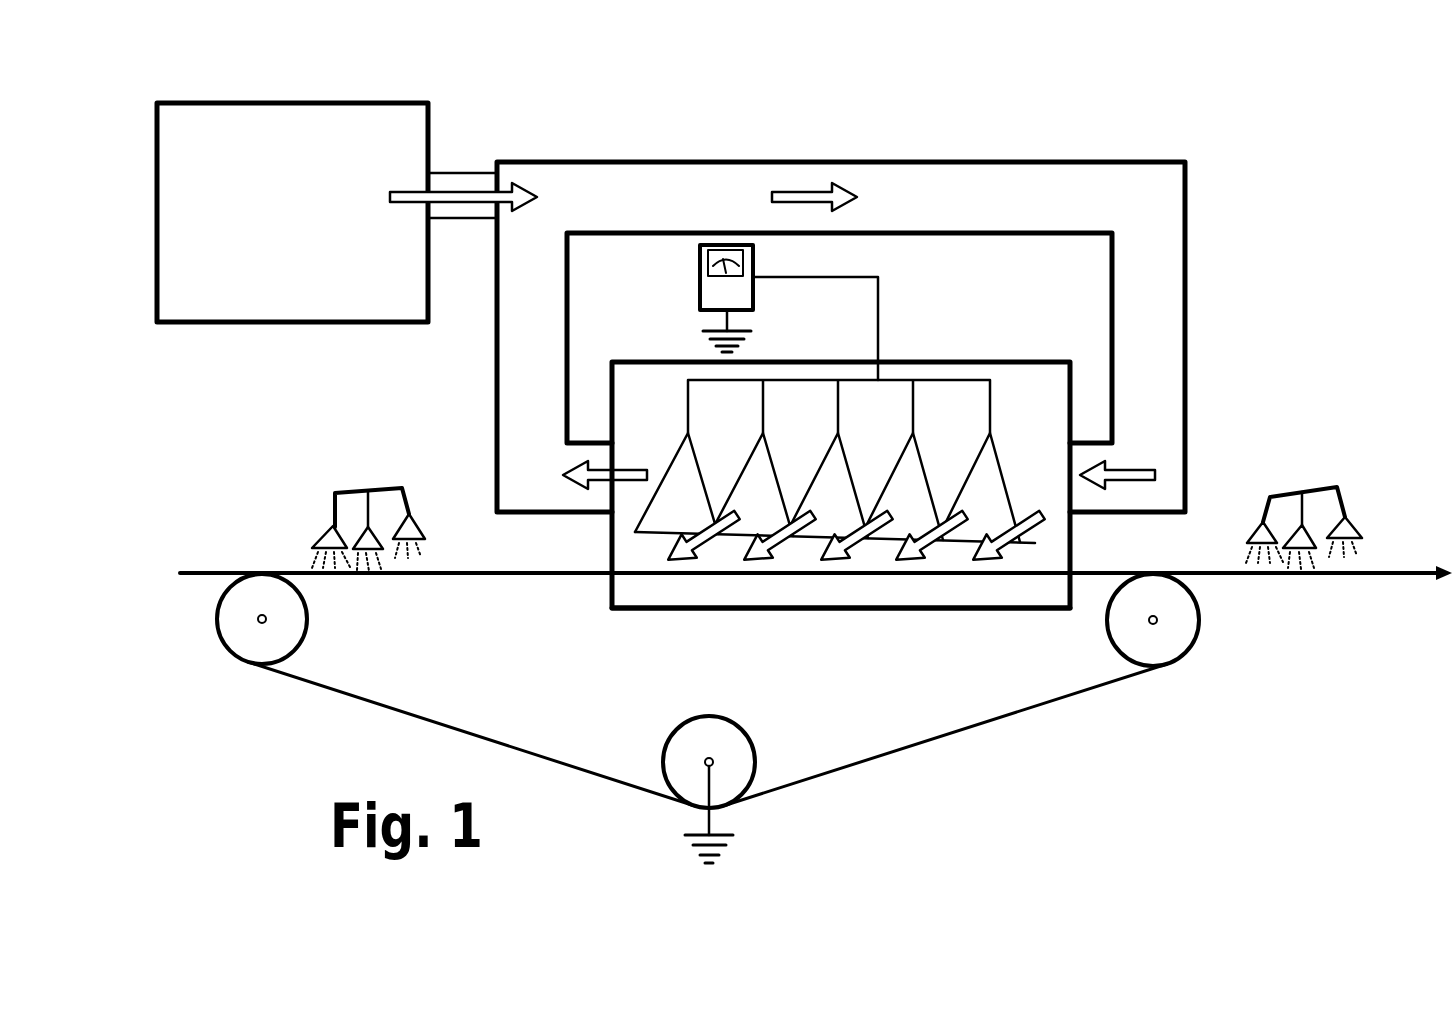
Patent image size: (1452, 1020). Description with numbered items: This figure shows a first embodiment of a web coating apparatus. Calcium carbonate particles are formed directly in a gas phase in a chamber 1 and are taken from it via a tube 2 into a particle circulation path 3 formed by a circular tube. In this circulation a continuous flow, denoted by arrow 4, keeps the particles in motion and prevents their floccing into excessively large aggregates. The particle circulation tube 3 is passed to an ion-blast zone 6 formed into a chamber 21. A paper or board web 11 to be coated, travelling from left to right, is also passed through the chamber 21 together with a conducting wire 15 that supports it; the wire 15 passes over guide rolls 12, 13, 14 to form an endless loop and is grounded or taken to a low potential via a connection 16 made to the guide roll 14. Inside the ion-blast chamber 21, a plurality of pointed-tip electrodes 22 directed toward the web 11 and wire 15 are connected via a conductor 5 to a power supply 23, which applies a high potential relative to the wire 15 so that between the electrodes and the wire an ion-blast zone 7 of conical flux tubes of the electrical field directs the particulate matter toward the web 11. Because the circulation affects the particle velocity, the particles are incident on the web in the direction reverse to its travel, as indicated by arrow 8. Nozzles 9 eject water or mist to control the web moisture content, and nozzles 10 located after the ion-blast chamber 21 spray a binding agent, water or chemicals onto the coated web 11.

The chamber 1 is at (278, 167).
The tube 2 is at (461, 196).
The particle circulation path 3 is at (657, 186).
The arrow 4 is at (806, 198).
The conductor 5 is at (882, 300).
The ion-blast zone 6 is at (1031, 375).
The ion-blast zone 7 is at (663, 523).
The arrow 8 is at (863, 538).
The nozzles 9 is at (350, 490).
The nozzles 10 is at (1288, 490).
The paper or board web 11 is at (197, 572).
The guide roll 12 is at (292, 630).
The guide roll 13 is at (1161, 656).
The guide roll 14 is at (680, 738).
The conducting wire 15 is at (998, 717).
The connection 16 is at (707, 819).
The chamber 21 is at (990, 612).
The pointed-tip electrodes 22 is at (917, 407).
The power supply 23 is at (707, 291).